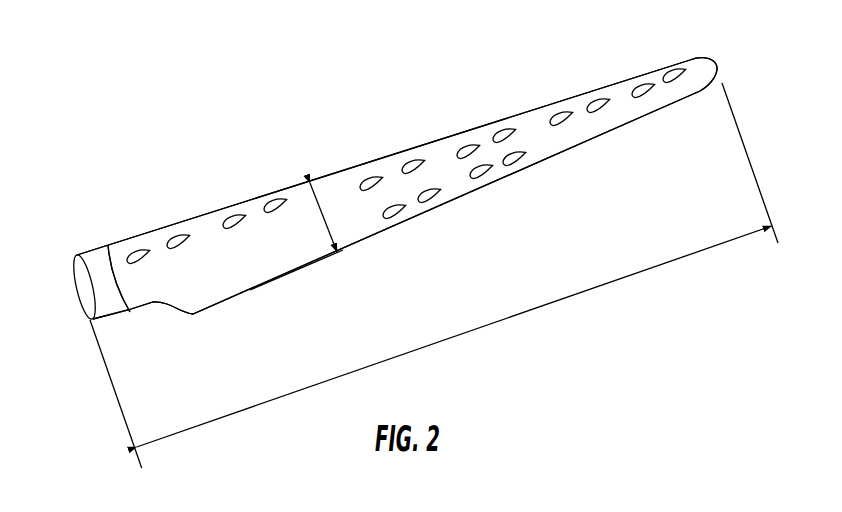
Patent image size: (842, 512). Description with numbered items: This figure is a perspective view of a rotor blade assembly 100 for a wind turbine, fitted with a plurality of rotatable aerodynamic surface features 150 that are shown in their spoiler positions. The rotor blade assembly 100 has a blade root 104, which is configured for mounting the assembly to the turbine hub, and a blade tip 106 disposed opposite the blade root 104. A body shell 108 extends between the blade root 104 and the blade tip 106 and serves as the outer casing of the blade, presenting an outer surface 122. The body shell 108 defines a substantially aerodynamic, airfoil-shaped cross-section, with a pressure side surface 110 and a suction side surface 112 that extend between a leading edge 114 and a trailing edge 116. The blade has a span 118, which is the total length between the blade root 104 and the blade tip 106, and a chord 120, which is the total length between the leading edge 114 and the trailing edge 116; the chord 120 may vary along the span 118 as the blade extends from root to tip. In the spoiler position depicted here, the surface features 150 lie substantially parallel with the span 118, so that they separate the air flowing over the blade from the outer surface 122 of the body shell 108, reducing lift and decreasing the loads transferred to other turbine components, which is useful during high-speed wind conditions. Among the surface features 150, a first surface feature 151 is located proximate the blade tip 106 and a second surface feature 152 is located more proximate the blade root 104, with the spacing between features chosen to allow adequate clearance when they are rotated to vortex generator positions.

The rotor blade assembly 100 is at (395, 170).
The blade root 104 is at (92, 253).
The blade tip 106 is at (717, 67).
The body shell 108 is at (243, 263).
The pressure side surface 110 is at (302, 242).
The suction side surface 112 is at (202, 257).
The leading edge 114 is at (268, 197).
The trailing edge 116 is at (363, 242).
The span 118 is at (563, 298).
The chord 120 is at (317, 207).
The outer surface 122 is at (192, 289).
The aerodynamic surface features 150 is at (490, 127).
The first surface feature 151 is at (677, 68).
The second surface feature 152 is at (373, 180).